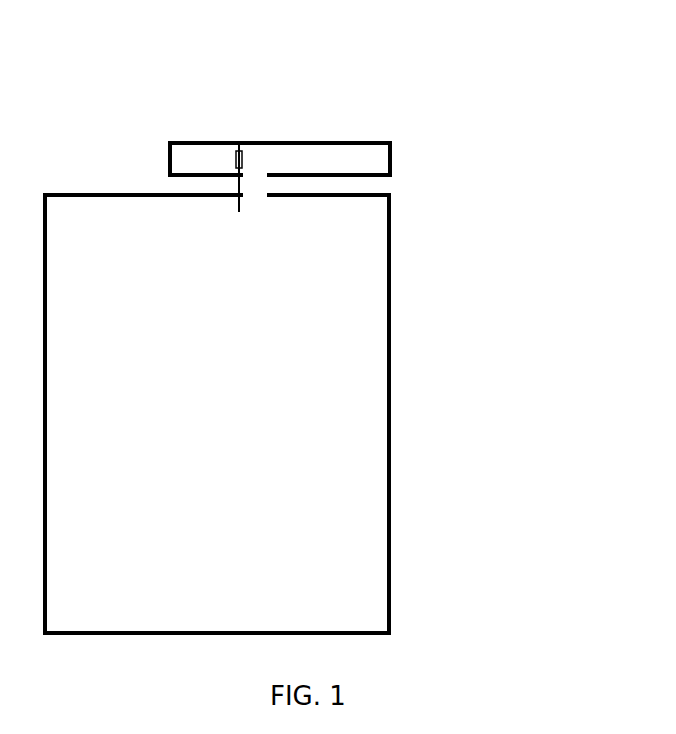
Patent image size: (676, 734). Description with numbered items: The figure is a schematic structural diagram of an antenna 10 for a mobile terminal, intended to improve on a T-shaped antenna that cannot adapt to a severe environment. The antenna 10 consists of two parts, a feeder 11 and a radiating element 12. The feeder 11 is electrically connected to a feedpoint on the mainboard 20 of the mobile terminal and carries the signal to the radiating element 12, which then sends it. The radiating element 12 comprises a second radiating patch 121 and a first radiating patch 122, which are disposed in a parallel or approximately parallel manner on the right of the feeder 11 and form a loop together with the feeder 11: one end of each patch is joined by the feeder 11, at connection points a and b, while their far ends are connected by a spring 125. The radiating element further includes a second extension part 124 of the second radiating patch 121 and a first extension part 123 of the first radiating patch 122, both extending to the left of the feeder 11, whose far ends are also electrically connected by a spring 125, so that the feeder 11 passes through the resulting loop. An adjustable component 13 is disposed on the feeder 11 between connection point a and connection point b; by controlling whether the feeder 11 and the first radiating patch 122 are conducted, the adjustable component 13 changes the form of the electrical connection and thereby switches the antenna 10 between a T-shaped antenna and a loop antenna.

The antenna 10 is at (308, 326).
The feeder 11 is at (241, 207).
The radiating element 12 is at (367, 128).
The adjustable component 13 is at (236, 161).
The mainboard 20 is at (358, 409).
The second radiating patch 121 is at (390, 176).
The first radiating patch 122 is at (258, 143).
The first extension part 123 is at (222, 143).
The second extension part 124 is at (192, 177).
The spring 125 is at (172, 160).